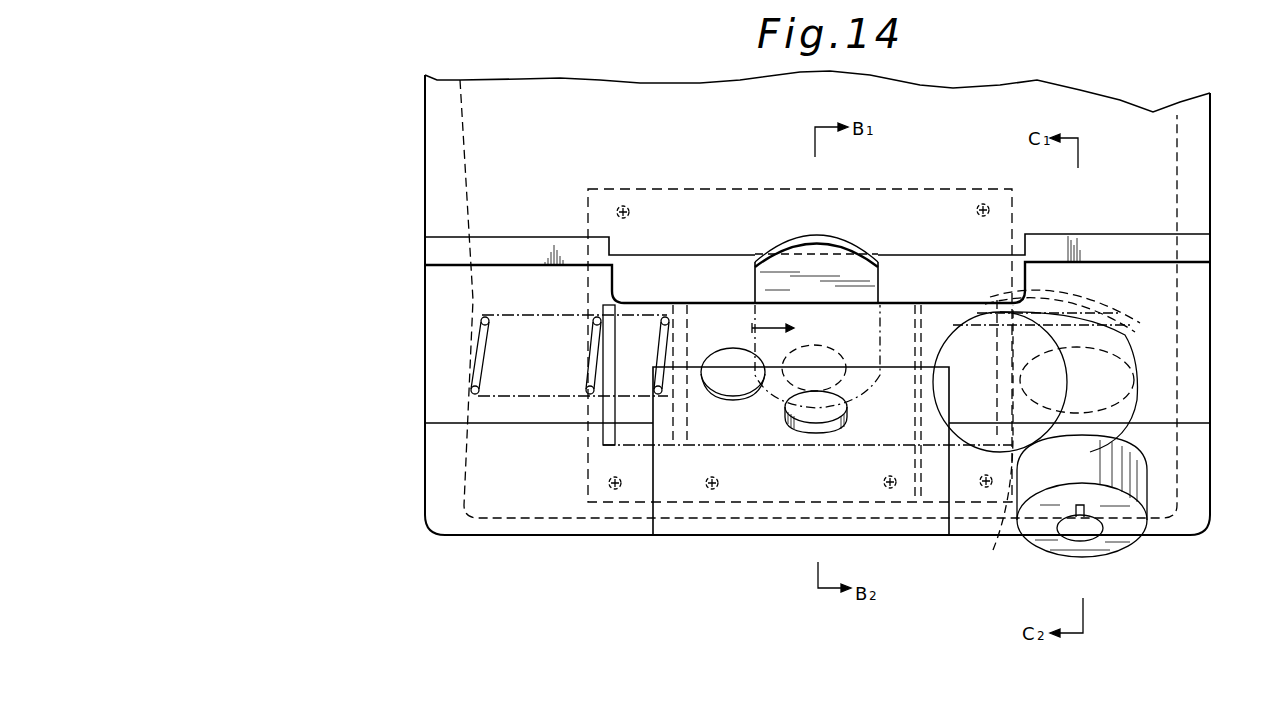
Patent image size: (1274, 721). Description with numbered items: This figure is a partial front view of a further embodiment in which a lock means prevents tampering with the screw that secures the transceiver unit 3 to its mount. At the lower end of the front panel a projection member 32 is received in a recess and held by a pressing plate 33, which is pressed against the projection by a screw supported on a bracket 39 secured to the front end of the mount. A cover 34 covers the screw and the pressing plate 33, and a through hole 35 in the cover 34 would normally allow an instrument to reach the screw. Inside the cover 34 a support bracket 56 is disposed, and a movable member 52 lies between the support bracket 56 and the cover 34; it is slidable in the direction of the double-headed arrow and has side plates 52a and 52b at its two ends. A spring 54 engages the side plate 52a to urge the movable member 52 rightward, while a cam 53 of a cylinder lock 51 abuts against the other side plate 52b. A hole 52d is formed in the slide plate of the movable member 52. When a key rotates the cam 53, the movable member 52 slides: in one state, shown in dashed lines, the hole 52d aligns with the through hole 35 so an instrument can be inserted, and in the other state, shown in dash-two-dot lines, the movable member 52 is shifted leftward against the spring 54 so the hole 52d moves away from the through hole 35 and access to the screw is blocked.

The transceiver unit 3 is at (425, 212).
The projection member 32 is at (944, 268).
The pressing plate 33 is at (852, 248).
The cover 34 is at (1188, 328).
The through hole 35 is at (830, 436).
The bracket 39 is at (586, 213).
The cylinder lock 51 is at (1122, 548).
The movable member 52 is at (766, 445).
The side plate 52a is at (673, 440).
The side plate 52b is at (993, 439).
The hole 52d is at (713, 358).
The cam 53 is at (1098, 305).
The spring 54 is at (538, 397).
The support bracket 56 is at (683, 440).